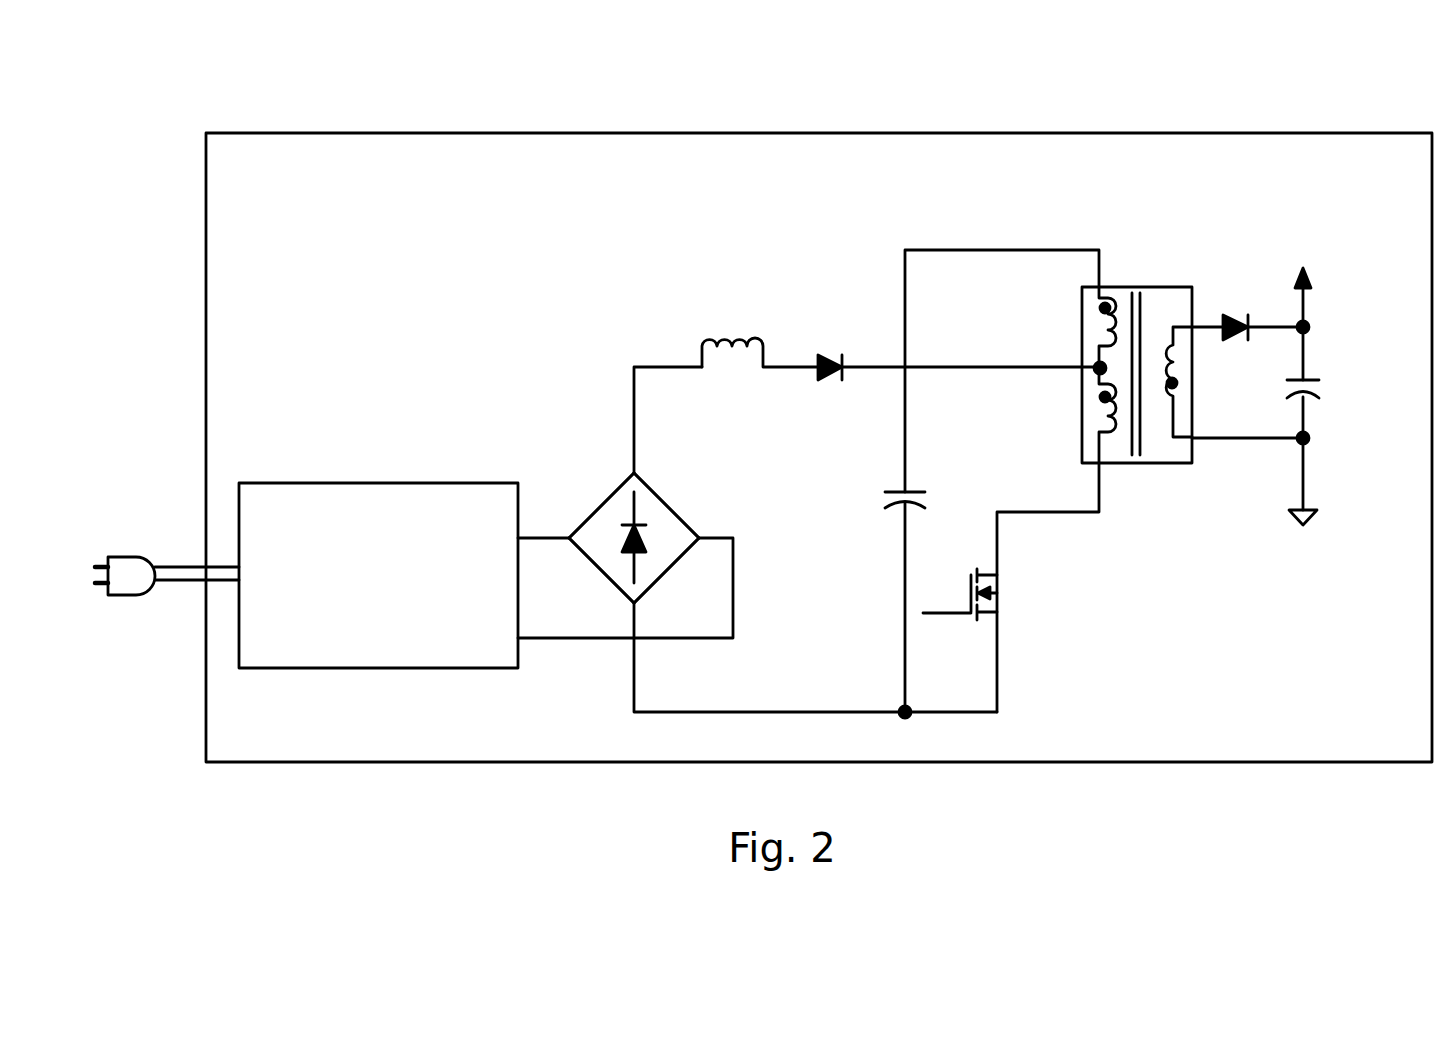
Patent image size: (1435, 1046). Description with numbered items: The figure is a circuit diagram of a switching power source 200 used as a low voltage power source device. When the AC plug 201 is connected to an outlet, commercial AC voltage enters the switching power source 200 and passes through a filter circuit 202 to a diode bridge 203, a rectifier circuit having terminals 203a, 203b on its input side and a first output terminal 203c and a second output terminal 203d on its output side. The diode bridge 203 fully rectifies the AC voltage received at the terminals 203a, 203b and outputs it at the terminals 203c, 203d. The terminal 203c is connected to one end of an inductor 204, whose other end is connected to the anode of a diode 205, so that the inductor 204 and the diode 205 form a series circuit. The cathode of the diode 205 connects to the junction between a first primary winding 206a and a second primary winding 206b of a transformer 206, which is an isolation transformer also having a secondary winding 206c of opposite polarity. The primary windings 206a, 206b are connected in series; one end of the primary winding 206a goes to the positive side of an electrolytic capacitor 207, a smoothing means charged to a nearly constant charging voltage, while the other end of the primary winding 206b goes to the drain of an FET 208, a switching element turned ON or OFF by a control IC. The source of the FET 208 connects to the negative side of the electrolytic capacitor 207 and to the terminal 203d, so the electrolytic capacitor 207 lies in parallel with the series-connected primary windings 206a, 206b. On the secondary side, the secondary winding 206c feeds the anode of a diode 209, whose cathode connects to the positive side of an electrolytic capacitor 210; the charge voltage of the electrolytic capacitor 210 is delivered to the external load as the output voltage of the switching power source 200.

The switching power source 200 is at (761, 130).
The AC plug 201 is at (142, 603).
The filter circuit 202 is at (388, 477).
The diode bridge 203 is at (745, 542).
The terminal 203a is at (562, 532).
The terminal 203b is at (705, 527).
The first output terminal 203c is at (645, 468).
The second output terminal 203d is at (628, 610).
The inductor 204 is at (732, 330).
The diode 205 is at (825, 347).
The transformer 206 is at (1064, 394).
The first primary winding 206a is at (1100, 322).
The second primary winding 206b is at (1100, 415).
The secondary winding 206c is at (1162, 335).
The electrolytic capacitor 207 is at (882, 510).
The FET 208 is at (1007, 597).
The diode 209 is at (1230, 307).
The electrolytic capacitor 210 is at (1328, 388).